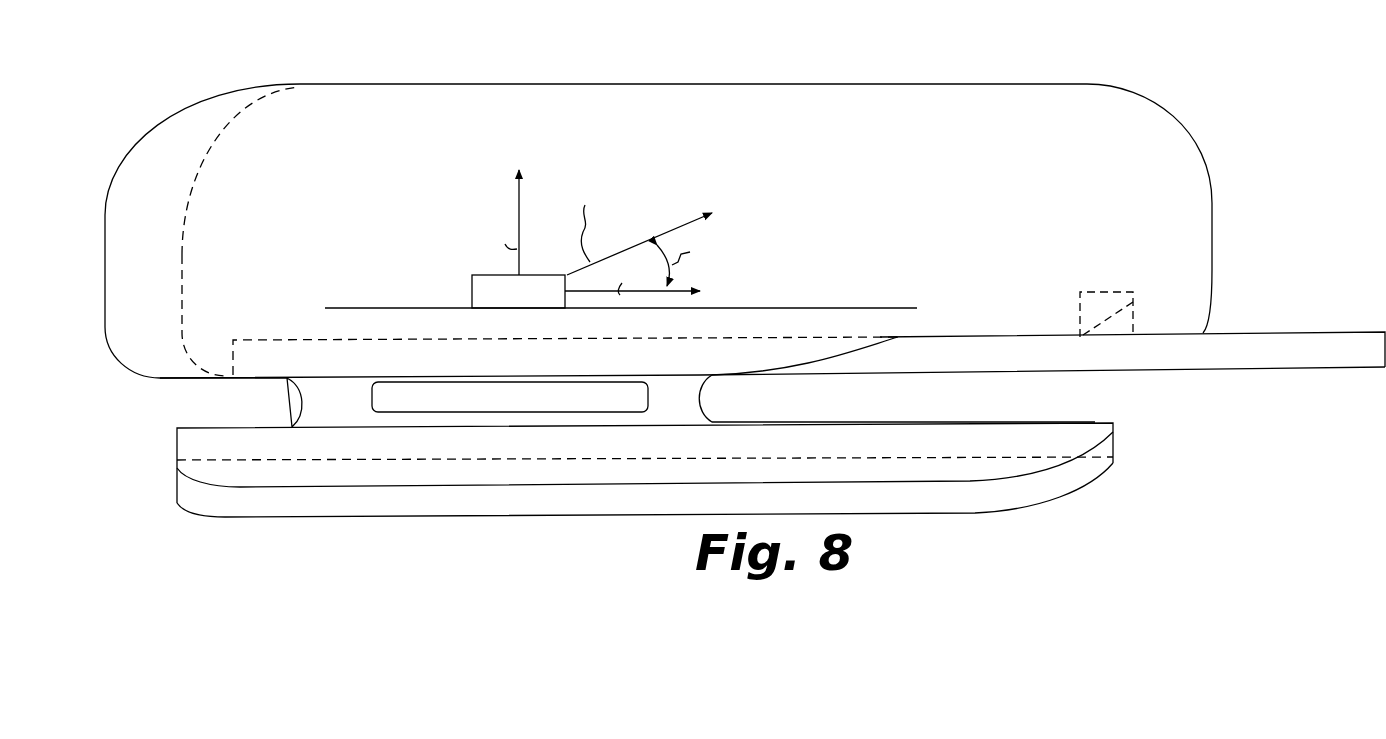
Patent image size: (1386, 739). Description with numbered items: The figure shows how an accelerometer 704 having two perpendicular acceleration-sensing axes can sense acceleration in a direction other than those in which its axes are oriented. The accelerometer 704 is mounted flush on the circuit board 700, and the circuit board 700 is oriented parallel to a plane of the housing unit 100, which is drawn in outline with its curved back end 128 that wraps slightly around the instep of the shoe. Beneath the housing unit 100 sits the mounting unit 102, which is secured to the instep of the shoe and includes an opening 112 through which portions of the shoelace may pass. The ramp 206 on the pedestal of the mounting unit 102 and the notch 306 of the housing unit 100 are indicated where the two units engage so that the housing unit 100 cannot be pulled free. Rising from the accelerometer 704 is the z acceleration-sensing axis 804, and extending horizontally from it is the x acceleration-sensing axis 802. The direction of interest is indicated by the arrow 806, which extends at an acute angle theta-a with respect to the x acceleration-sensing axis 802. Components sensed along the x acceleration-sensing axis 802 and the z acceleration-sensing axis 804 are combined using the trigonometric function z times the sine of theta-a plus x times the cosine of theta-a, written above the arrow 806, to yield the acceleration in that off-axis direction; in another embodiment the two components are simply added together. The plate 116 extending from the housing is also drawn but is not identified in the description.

The housing unit 100 is at (590, 82).
The mounting unit 102 is at (1102, 403).
The opening 112 is at (457, 404).
The circuit board plate 116 is at (1250, 332).
The curved back end 128 is at (104, 211).
The ramp 206 is at (1116, 329).
The notch 306 is at (1098, 295).
The circuit board 700 is at (838, 307).
The accelerometer 704 is at (472, 286).
The x acceleration-sensing axis 802 is at (676, 288).
The z acceleration-sensing axis 804 is at (518, 196).
The arrow 806 is at (714, 222).